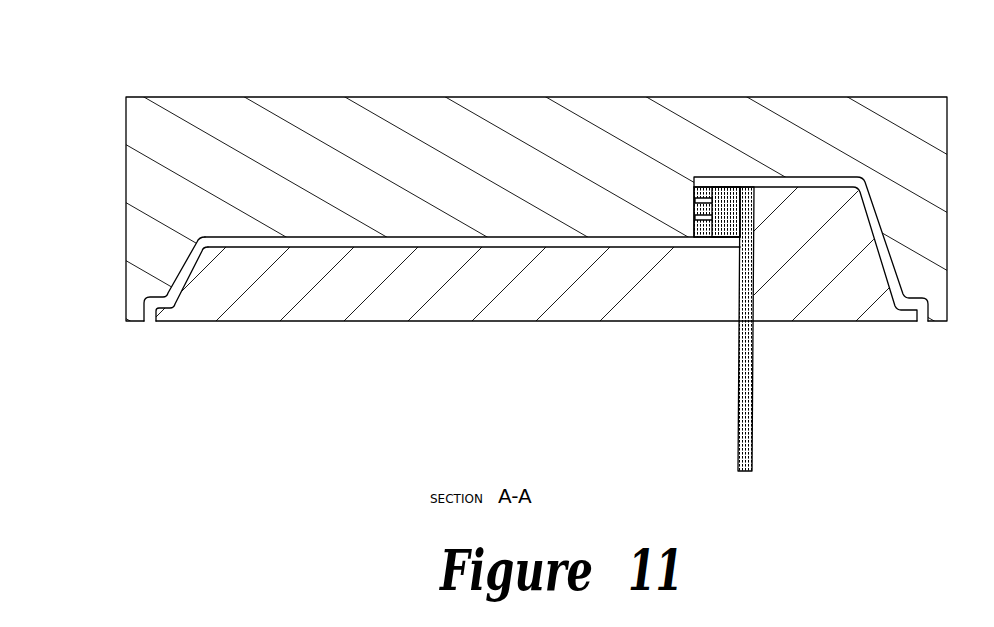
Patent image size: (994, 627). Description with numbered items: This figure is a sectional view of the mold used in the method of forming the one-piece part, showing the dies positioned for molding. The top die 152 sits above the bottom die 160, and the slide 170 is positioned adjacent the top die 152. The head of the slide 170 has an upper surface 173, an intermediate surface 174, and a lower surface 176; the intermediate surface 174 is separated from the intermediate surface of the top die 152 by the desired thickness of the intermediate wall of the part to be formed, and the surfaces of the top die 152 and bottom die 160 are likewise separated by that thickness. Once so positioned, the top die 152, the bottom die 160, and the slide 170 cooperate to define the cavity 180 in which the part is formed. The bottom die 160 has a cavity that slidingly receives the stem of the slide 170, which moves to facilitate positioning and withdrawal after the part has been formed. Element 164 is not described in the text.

The top die 152 is at (110, 175).
The bottom die 160 is at (184, 325).
The cover 164 is at (812, 187).
The slide 170 is at (768, 390).
The upper surface 173 is at (725, 188).
The intermediate surface 174 is at (693, 190).
The lower surface 176 is at (700, 220).
The cavity 180 is at (460, 242).